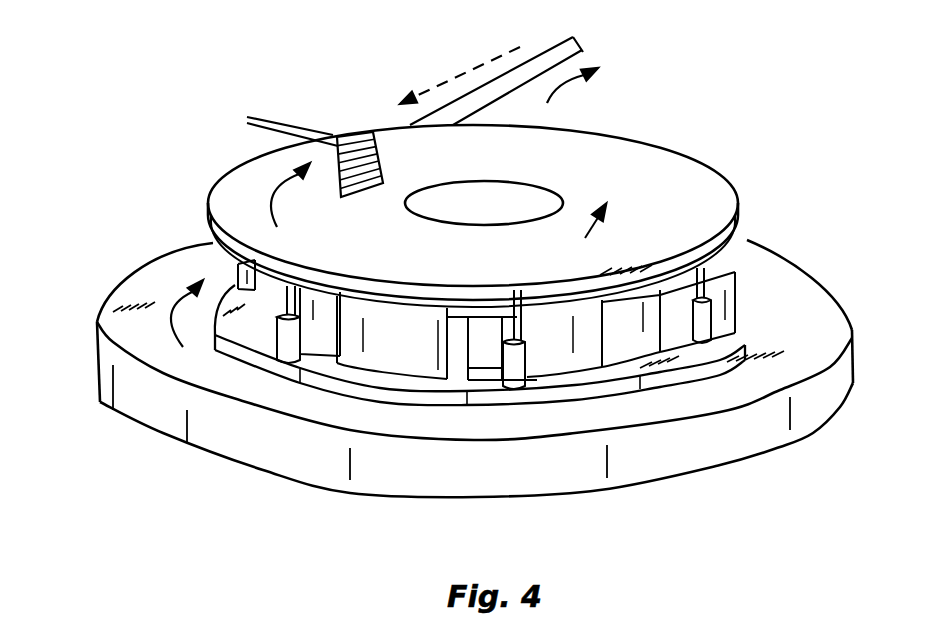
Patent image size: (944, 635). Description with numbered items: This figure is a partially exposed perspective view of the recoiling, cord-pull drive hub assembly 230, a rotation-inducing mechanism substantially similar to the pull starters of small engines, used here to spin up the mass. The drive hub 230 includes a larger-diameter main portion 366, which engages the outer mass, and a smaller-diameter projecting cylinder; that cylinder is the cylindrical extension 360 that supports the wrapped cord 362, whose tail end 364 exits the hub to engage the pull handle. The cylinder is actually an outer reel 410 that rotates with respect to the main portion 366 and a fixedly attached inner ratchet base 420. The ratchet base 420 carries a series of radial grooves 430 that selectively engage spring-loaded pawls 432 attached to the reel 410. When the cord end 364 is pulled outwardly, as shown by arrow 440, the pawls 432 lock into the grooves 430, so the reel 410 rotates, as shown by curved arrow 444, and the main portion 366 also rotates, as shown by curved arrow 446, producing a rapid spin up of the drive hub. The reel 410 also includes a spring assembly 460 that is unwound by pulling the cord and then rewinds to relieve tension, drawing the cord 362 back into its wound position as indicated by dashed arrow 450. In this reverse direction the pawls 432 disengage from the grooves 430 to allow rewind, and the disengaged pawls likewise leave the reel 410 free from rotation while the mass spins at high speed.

The recoiling, cord-pull drive hub assembly 230 is at (484, 367).
The cylindrical extension 360 is at (664, 168).
The wrapped cord 362 is at (289, 152).
The tail end of the cord 364 is at (540, 67).
The main drive hub portion 366 is at (700, 410).
The reel 410 is at (723, 177).
The inner ratchet base 420 is at (517, 387).
The radial grooves 430 is at (257, 310).
The pawls 432 is at (483, 258).
The arrow indicating outward pull of the cord end 440 is at (565, 97).
The curved arrow indicating reel rotation 444 is at (211, 200).
The curved arrow indicating main portion rotation 446 is at (97, 320).
The dashed arrow indicating cord rewind 450 is at (455, 77).
The spring assembly 460 is at (607, 368).